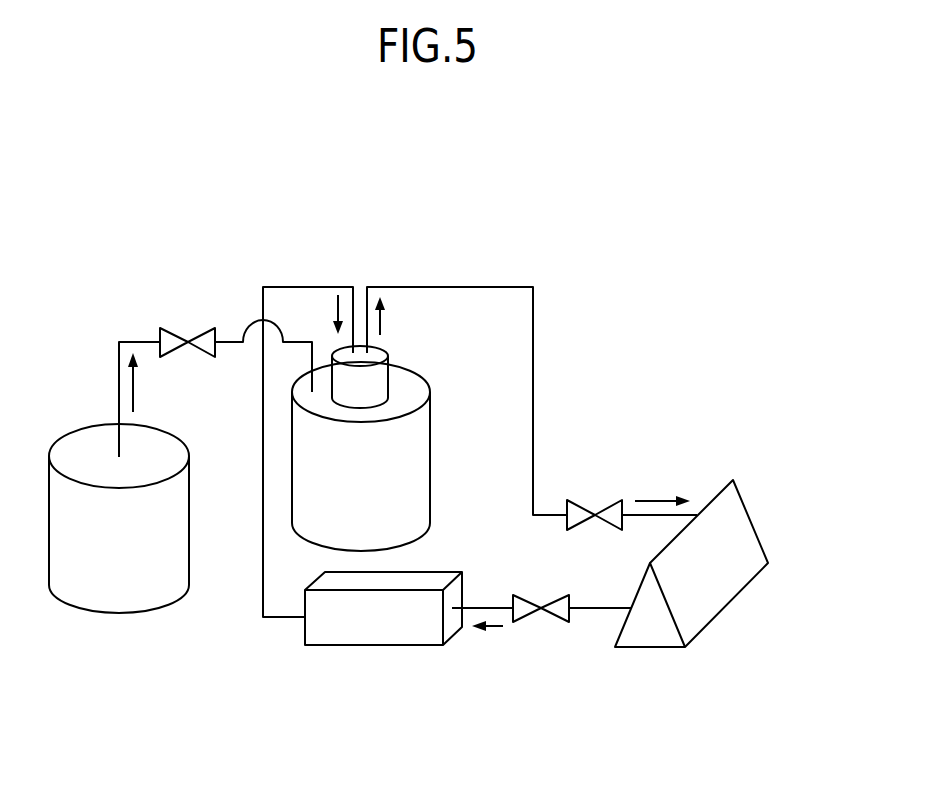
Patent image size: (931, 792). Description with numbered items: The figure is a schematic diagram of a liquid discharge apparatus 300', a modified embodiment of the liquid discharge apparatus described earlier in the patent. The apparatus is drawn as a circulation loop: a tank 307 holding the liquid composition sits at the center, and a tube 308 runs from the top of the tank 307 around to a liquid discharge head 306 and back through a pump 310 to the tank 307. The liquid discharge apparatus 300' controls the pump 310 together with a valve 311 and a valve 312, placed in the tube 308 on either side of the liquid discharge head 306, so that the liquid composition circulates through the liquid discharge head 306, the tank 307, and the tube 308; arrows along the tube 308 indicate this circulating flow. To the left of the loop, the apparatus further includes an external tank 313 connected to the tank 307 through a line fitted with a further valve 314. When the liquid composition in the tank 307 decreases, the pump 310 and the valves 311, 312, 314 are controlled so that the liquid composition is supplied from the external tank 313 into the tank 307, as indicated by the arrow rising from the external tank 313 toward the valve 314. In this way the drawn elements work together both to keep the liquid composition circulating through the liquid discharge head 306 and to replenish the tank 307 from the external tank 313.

The liquid discharge apparatus 300' is at (377, 235).
The liquid discharge head 306 is at (740, 492).
The tank 307 is at (430, 453).
The tube 308 is at (452, 286).
The pump 310 is at (372, 645).
The valve 311 is at (553, 622).
The valve 312 is at (585, 505).
The external tank 313 is at (118, 613).
The valve 314 is at (178, 330).